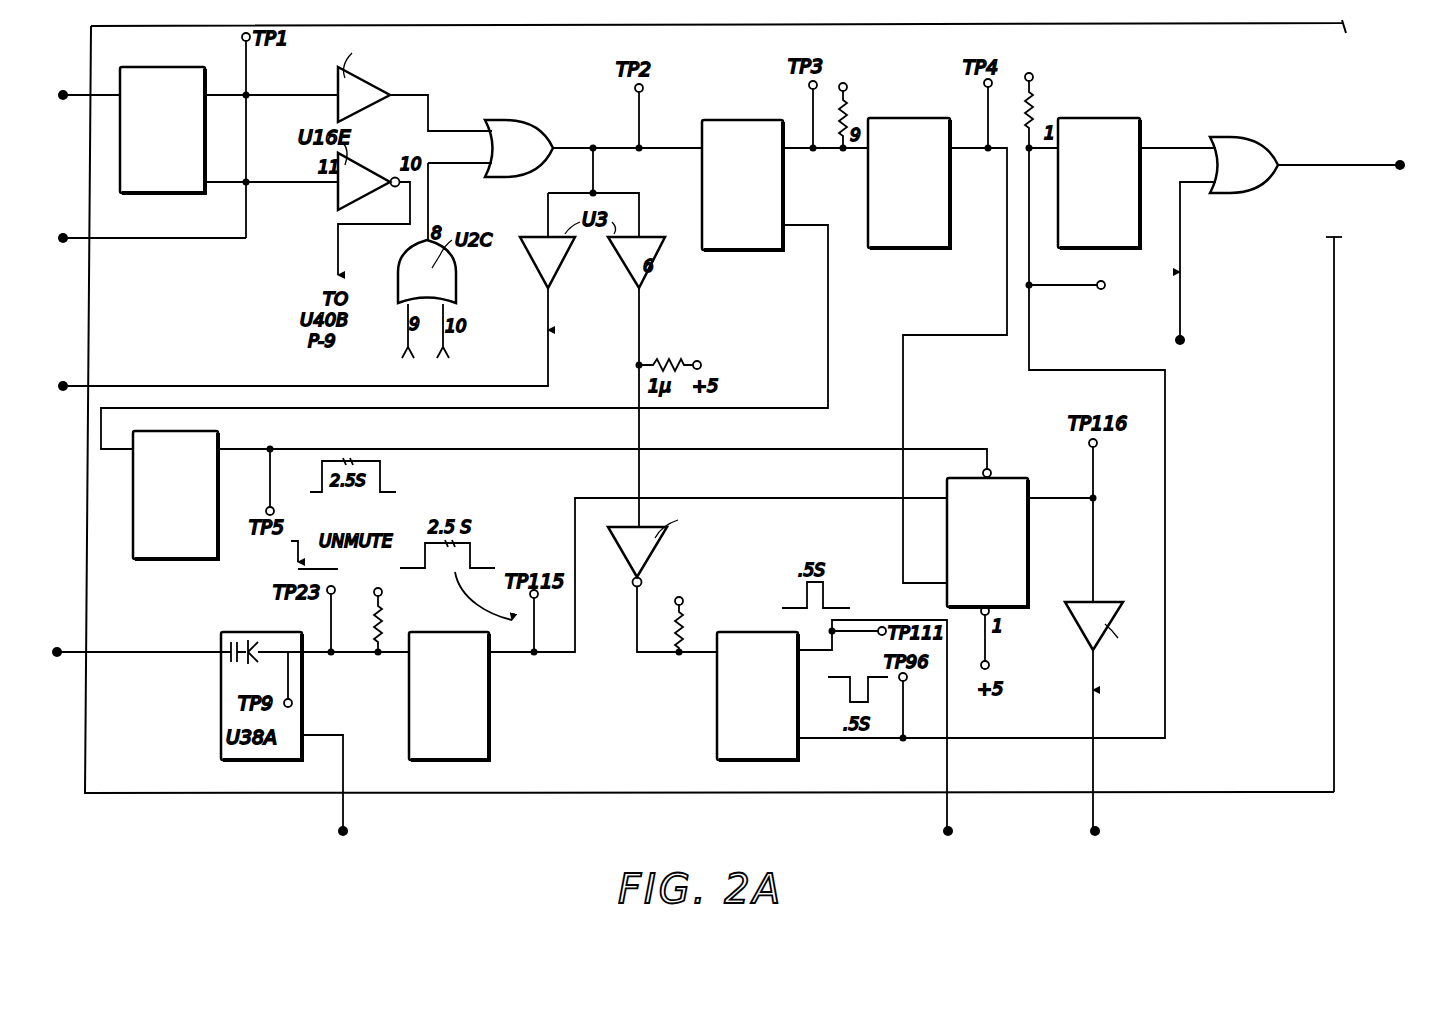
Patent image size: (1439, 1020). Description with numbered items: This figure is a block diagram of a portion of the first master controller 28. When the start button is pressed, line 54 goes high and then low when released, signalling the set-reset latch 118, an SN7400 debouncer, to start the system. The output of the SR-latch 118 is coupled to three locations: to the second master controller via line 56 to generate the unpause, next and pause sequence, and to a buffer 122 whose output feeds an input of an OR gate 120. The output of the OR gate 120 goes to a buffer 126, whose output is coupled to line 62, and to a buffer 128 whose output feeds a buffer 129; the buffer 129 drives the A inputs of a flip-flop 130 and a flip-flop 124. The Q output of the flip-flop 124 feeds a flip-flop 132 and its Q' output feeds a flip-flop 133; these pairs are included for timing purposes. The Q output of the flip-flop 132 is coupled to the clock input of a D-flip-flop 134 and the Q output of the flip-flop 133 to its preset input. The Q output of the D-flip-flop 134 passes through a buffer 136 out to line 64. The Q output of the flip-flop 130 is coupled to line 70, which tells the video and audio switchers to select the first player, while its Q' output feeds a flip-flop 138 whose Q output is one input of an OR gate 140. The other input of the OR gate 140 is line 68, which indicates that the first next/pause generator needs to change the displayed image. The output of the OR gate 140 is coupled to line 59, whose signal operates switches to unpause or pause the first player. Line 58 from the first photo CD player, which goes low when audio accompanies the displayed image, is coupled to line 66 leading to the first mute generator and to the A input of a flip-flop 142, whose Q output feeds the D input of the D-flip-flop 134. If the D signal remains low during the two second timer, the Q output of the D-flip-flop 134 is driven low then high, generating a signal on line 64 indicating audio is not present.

The first master controller 28 is at (1343, 385).
The line 54 is at (104, 93).
The line 56 is at (247, 213).
The line 58 is at (163, 660).
The line 59 is at (1336, 168).
The line 62 is at (538, 318).
The line 64 is at (1088, 676).
The line 66 is at (350, 772).
The line 68 is at (1183, 292).
The line 70 is at (948, 700).
The set-reset latch 118 is at (150, 198).
The OR gate 120 is at (558, 98).
The buffer 122 is at (370, 108).
The flip-flop 124 is at (740, 252).
The buffer 126 is at (528, 248).
The buffer 128 is at (612, 248).
The buffer 129 is at (662, 542).
The flip-flop 130 is at (712, 735).
The flip-flop 132 is at (912, 250).
The flip-flop 133 is at (203, 562).
The D-flip-flop 134 is at (1023, 478).
The buffer 136 is at (1083, 642).
The flip-flop 138 is at (1143, 250).
The OR gate 140 is at (1258, 190).
The flip-flop 142 is at (490, 696).